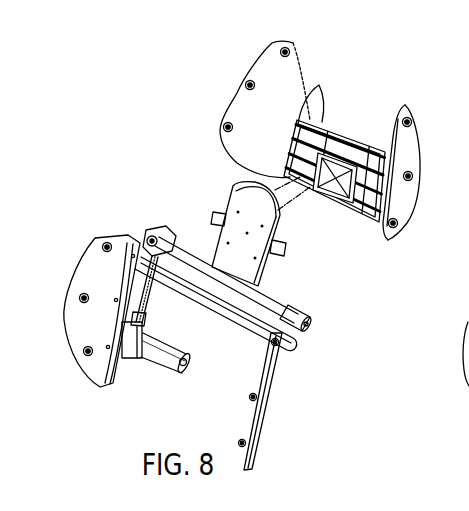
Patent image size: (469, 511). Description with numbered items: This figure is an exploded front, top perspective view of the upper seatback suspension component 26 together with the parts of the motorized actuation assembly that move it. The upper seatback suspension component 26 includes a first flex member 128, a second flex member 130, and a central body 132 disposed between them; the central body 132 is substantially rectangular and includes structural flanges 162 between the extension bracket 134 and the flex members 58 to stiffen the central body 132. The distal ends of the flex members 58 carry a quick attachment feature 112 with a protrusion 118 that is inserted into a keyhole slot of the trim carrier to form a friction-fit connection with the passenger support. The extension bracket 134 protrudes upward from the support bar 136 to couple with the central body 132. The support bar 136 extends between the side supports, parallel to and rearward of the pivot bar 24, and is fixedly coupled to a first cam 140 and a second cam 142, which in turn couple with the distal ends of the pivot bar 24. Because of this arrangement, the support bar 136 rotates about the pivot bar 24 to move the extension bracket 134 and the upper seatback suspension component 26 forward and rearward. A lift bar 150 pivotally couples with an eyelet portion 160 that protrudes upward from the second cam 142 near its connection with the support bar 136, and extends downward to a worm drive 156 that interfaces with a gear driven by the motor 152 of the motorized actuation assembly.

The pivot bar 24 is at (249, 318).
The upper seatback suspension component 26 is at (240, 108).
The flex members 58 is at (93, 270).
The quick attachment feature 112 is at (242, 243).
The protrusion 118 is at (246, 80).
The first flex member 128 is at (407, 148).
The second flex member 130 is at (258, 62).
The central body 132 is at (338, 137).
The extension bracket 134 is at (247, 206).
The support bar 136 is at (239, 308).
The first cam 140 is at (305, 330).
The second cam 142 is at (148, 235).
The lift bar 150 is at (152, 272).
The motor 152 is at (167, 358).
The worm drive 156 is at (146, 312).
The eyelet portion 160 is at (146, 213).
The structural flanges 162 is at (305, 118).